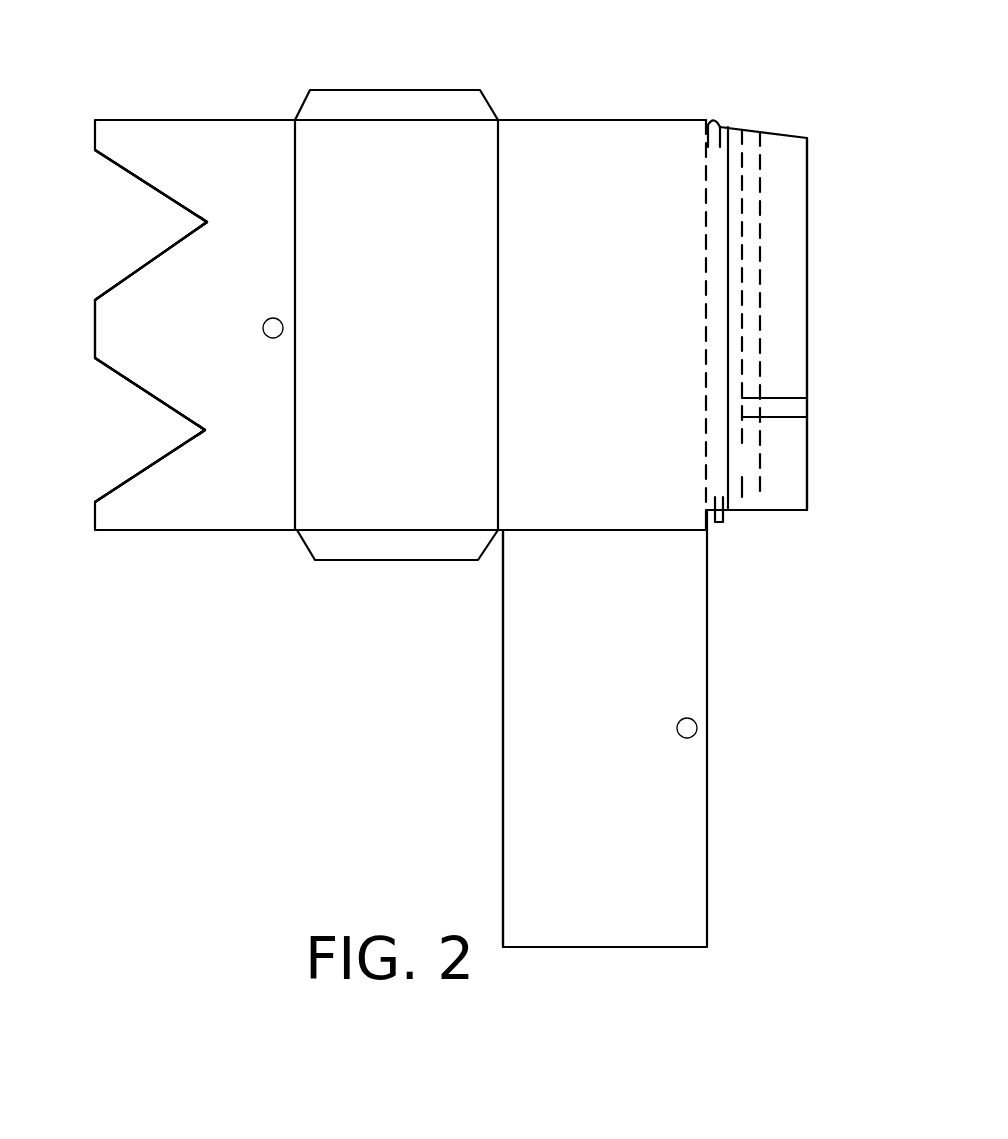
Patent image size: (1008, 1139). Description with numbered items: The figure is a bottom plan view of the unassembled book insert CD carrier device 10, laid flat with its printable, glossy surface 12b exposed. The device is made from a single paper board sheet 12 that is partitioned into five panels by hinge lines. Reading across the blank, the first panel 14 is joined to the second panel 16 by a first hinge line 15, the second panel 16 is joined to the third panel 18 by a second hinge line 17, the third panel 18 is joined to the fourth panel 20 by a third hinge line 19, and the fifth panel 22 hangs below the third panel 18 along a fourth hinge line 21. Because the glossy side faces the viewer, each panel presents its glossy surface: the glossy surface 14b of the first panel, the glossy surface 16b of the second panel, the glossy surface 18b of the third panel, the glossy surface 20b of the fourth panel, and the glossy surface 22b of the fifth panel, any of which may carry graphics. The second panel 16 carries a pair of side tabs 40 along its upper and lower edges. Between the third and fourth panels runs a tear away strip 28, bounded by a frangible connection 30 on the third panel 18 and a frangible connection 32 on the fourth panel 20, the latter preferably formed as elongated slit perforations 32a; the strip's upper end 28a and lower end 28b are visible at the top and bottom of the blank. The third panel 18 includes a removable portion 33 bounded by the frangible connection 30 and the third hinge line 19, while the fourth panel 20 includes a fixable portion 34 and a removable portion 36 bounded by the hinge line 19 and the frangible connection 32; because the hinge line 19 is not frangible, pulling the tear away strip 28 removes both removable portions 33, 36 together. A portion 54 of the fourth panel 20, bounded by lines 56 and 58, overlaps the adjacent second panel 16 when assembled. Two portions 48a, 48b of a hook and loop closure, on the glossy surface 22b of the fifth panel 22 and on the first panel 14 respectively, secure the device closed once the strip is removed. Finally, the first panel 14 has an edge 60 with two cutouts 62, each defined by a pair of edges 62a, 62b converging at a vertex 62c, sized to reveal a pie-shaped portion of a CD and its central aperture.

The book insert CD carrier device 10 is at (338, 700).
The paper board sheet 12 is at (503, 625).
The glossy surface 12b is at (373, 477).
The first panel 14 is at (182, 344).
The glossy surface of the first panel 14b is at (291, 407).
The first hinge line 15 is at (295, 377).
The second panel 16 is at (367, 317).
The glossy surface of the second panel 16b is at (378, 190).
The second hinge line 17 is at (498, 365).
The third panel 18 is at (600, 213).
The glossy surface of the third panel 18b is at (558, 195).
The third hinge line 19 is at (728, 385).
The fourth panel 20 is at (762, 307).
The glossy surface of the fourth panel 20b is at (746, 227).
The fourth hinge line 21 is at (593, 530).
The fifth panel 22 is at (579, 689).
The glossy surface of the fifth panel 22b is at (617, 779).
The tear away strip 28 is at (715, 168).
The upper end of slot 28a is at (716, 125).
The lower end of slot 28b is at (722, 522).
The frangible connection 30 is at (703, 190).
The frangible connection 32 is at (762, 262).
The elongated slit perforations 32a is at (760, 187).
The removable portion 33 is at (720, 415).
The fixable portion 34 is at (790, 512).
The removable portion 36 is at (748, 503).
The side tabs 40 is at (402, 90).
The portion of a hook and loop closure 48a is at (694, 735).
The portion of a hook and loop closure 48b is at (270, 318).
The overlapping portion 54 is at (783, 398).
The line 56 is at (745, 490).
The line 58 is at (805, 285).
The edge 60 is at (93, 349).
The cutouts 62 is at (153, 192).
The edge of cutout 62a is at (142, 268).
The edge of cutout 62b is at (123, 167).
The vertex 62c is at (213, 225).